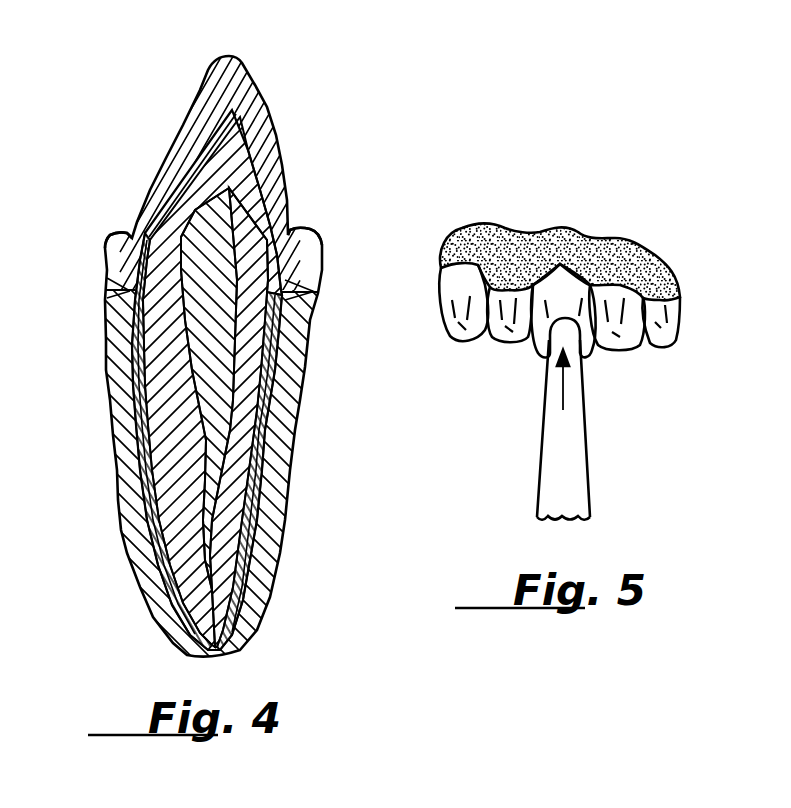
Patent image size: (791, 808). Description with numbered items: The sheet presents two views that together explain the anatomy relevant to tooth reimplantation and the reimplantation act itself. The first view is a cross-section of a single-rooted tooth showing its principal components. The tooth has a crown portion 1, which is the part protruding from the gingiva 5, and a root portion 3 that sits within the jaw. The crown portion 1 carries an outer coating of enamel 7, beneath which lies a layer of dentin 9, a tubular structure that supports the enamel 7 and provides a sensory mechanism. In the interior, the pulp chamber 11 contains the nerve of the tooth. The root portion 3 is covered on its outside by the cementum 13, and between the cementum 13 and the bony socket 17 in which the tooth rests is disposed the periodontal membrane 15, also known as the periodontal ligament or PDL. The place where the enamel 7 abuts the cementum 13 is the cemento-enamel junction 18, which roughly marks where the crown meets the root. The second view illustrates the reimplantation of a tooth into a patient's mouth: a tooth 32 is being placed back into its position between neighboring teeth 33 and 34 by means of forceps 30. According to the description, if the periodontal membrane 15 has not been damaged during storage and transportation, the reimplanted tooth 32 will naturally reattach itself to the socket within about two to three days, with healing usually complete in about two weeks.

In FIG. 4, the crown portion 1 is at (290, 172).
In FIG. 4, the root portion 3 is at (245, 392).
In FIG. 4, the gingiva 5 is at (115, 243).
In FIG. 4, the enamel 7 is at (258, 128).
In FIG. 4, the dentin 9 is at (167, 227).
In FIG. 4, the pulp chamber 11 is at (213, 320).
In FIG. 4, the cementum 13 is at (150, 478).
In FIG. 4, the periodontal membrane 15 is at (152, 540).
In FIG. 4, the bony socket 17 is at (292, 395).
In FIG. 4, the cemento-enamel junction 18 is at (128, 300).
In FIG. 5, the forceps 30 is at (575, 478).
In FIG. 5, the tooth 32 is at (556, 308).
In FIG. 5, the tooth 33 is at (628, 348).
In FIG. 5, the tooth 34 is at (510, 345).